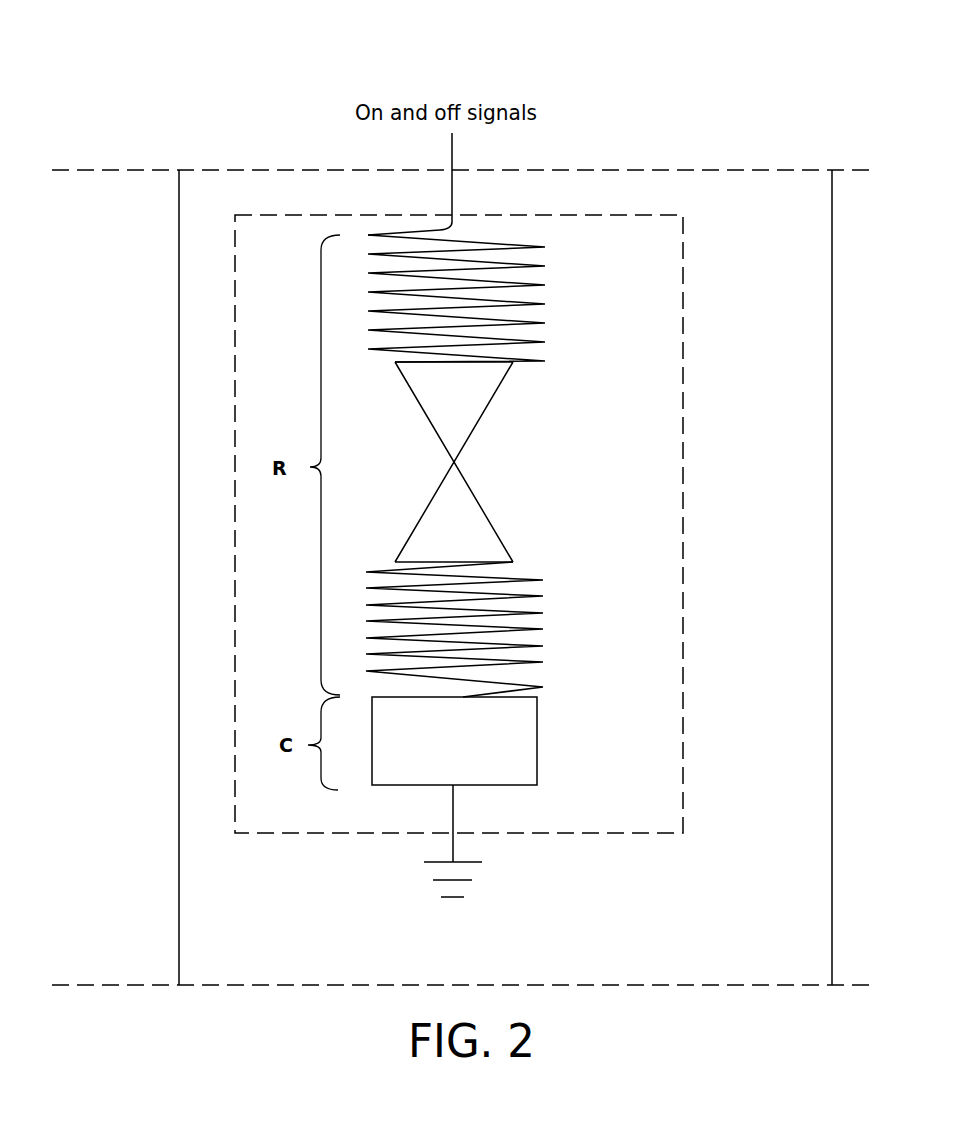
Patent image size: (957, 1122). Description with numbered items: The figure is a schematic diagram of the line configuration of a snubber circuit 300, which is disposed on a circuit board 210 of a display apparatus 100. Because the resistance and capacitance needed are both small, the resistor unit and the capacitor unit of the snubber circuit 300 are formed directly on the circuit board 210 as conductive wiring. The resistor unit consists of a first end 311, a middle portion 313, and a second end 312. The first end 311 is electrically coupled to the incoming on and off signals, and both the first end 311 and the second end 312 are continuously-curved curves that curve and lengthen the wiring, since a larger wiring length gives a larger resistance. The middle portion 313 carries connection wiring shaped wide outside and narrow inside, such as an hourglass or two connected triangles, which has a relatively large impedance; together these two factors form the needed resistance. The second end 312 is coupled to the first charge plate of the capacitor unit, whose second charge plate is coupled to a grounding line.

The display apparatus 100 is at (718, 76).
The circuit board 210 is at (724, 170).
The snubber circuit 300 is at (683, 475).
The first end 311 is at (543, 300).
The second end 312 is at (543, 625).
The middle portion 313 is at (477, 497).